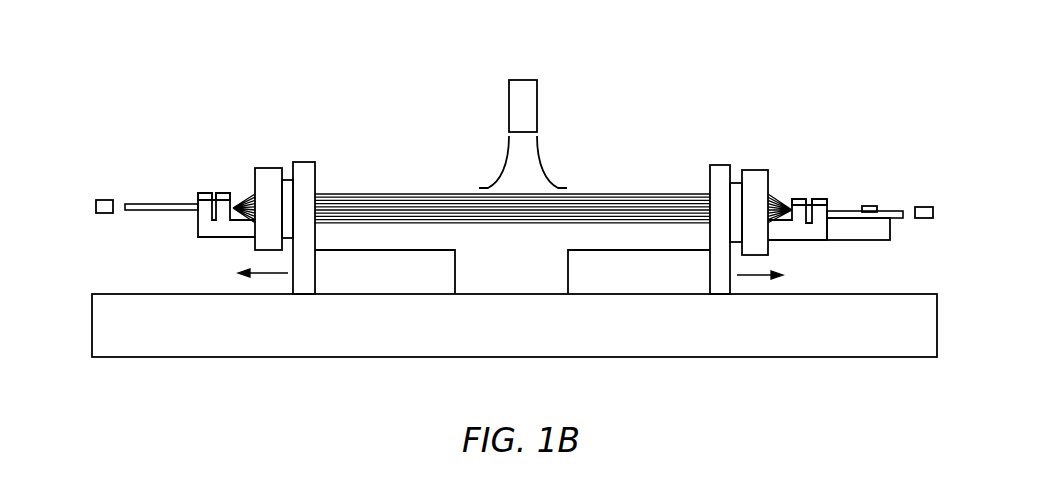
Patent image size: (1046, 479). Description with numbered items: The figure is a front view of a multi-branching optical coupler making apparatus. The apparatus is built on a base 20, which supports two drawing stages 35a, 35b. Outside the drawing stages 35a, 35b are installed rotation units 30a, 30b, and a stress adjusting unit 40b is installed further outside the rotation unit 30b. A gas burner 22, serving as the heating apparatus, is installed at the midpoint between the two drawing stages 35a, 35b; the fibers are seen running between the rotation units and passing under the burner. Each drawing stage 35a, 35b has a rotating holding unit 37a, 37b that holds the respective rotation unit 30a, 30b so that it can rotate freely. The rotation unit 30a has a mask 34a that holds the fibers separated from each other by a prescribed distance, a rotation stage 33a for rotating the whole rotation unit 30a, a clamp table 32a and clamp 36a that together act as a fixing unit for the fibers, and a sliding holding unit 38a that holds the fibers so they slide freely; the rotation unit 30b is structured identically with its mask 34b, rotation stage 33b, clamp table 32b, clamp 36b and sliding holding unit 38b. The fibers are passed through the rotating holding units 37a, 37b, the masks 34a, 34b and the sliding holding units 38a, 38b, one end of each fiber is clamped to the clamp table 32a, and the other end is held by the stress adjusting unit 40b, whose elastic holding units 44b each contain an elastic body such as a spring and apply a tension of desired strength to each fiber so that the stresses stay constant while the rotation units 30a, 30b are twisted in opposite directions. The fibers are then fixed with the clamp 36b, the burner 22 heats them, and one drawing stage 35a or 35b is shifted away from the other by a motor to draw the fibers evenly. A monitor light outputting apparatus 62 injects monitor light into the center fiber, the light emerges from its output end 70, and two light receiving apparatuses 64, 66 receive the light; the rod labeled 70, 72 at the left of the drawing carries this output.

The base 20 is at (514, 315).
The gas burner 22 is at (522, 80).
The rotation unit 30a is at (254, 165).
The rotation unit 30b is at (771, 167).
The clamp table 32a is at (203, 210).
The clamp table 32b is at (823, 206).
The rotation stage 33a is at (257, 168).
The rotation stage 33b is at (758, 172).
The mask 34a is at (290, 180).
The mask 34b is at (736, 183).
The drawing stage 35a is at (458, 283).
The drawing stage 35b is at (567, 283).
The clamp 36a is at (200, 193).
The clamp 36b is at (820, 198).
The rotating holding unit 37a is at (308, 163).
The rotating holding unit 37b is at (712, 165).
The sliding holding unit 38a is at (221, 193).
The sliding holding unit 38b is at (802, 198).
The stress adjusting unit 40b is at (876, 140).
The elastic holding unit 44b is at (867, 206).
The monitor light outputting apparatus 62 is at (923, 219).
The light receiving apparatus 64 is at (121, 238).
The light receiving apparatus 66 is at (104, 214).
The output end 70 is at (135, 171).
The rod 72 is at (150, 203).